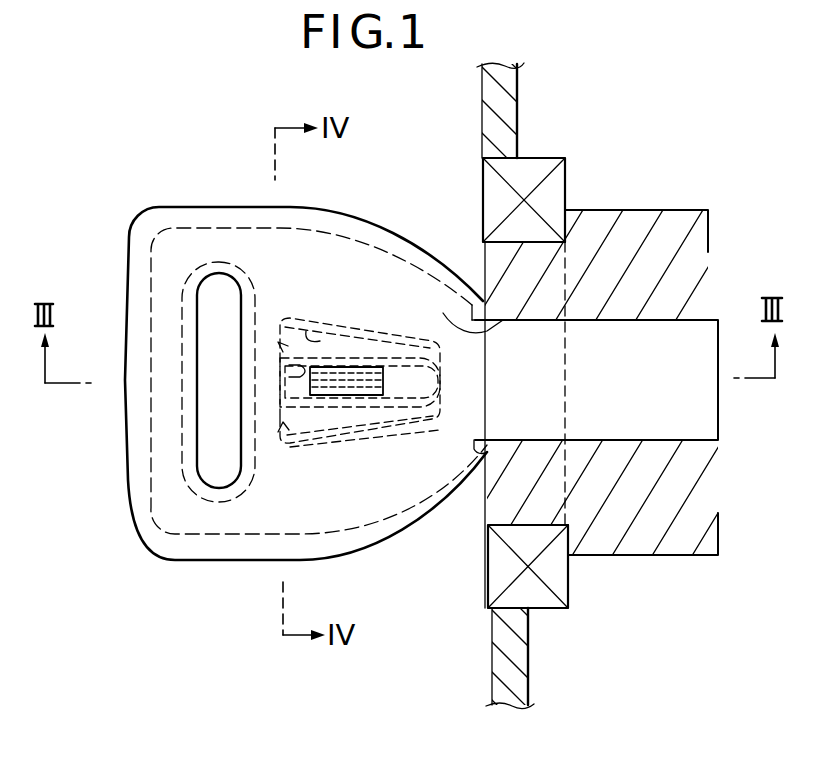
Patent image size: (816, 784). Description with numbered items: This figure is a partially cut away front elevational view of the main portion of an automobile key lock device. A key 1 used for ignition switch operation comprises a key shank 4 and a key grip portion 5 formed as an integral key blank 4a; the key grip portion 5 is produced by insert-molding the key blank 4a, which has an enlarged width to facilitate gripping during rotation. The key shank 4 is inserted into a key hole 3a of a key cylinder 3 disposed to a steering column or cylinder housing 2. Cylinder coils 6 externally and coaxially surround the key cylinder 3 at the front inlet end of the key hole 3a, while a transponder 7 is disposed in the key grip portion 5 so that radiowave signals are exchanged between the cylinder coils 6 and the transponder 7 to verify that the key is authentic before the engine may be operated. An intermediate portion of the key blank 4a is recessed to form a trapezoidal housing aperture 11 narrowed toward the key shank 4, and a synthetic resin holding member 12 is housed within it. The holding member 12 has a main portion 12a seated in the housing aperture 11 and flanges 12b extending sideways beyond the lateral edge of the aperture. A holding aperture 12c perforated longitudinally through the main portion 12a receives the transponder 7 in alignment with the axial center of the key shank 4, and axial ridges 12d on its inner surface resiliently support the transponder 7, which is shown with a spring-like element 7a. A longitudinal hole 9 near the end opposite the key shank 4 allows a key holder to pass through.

The key 1 is at (205, 156).
The cylinder housing 2 is at (483, 130).
The key cylinder 3 is at (665, 222).
The key hole 3a is at (468, 313).
The key shank 4 is at (655, 417).
The key blank 4a is at (188, 535).
The key grip portion 5 is at (146, 211).
The cylinder coils 6 is at (548, 157).
The transponder 7 is at (398, 355).
The spring 7a is at (332, 398).
The longitudinal hole 9 is at (205, 421).
The housing aperture 11 is at (308, 333).
The holding member 12 is at (279, 428).
The main portion 12a is at (367, 422).
The flanges 12b is at (407, 428).
The holding aperture 12c is at (354, 360).
The axial ridges 12d is at (286, 362).